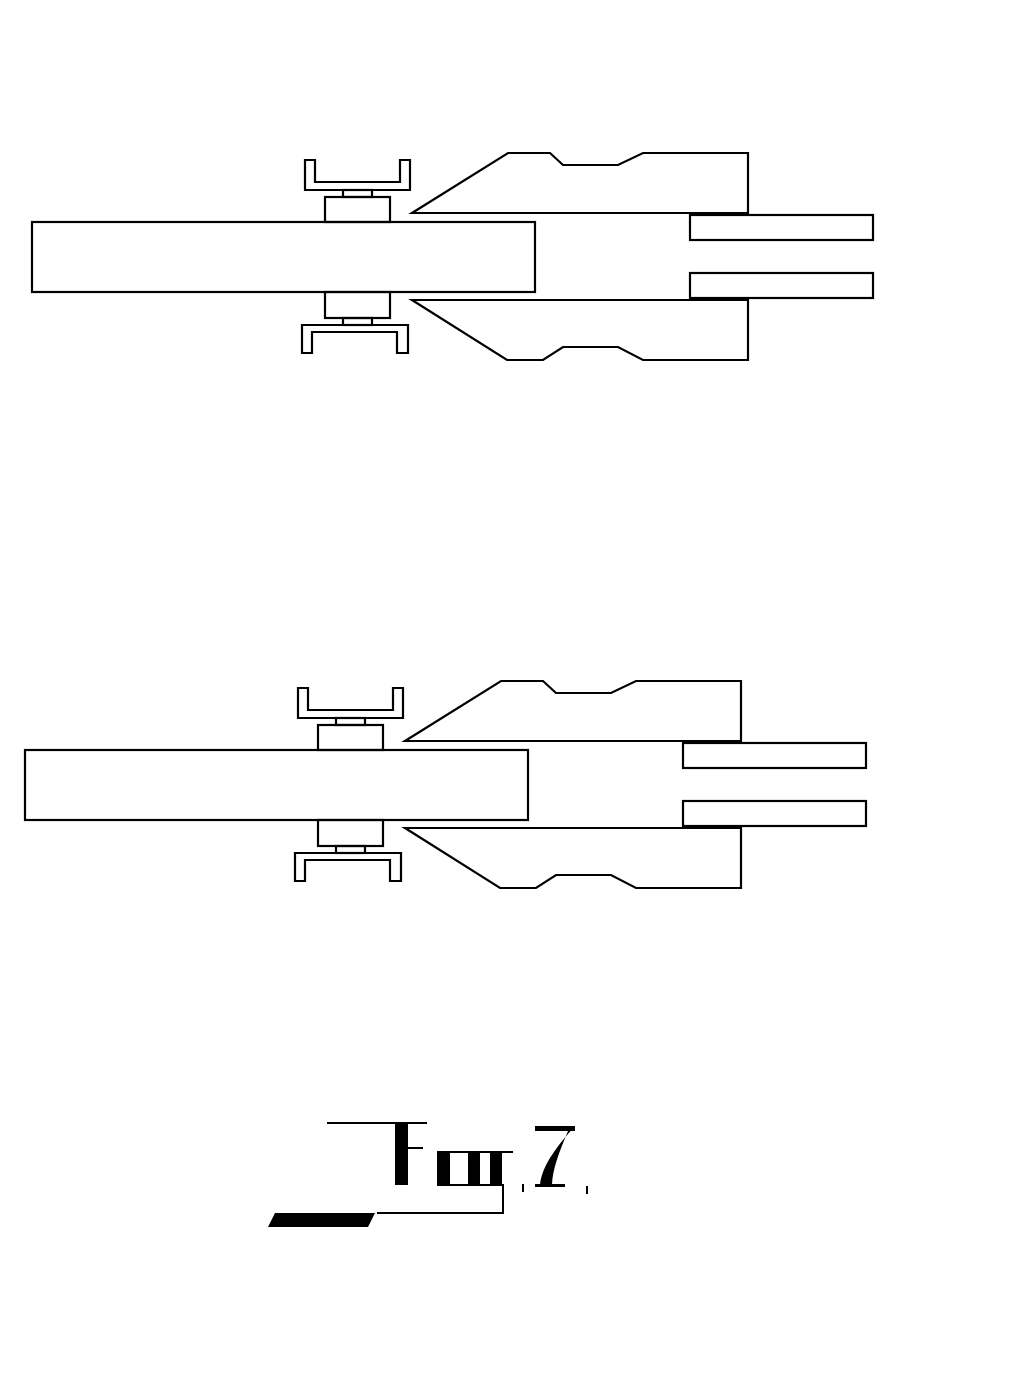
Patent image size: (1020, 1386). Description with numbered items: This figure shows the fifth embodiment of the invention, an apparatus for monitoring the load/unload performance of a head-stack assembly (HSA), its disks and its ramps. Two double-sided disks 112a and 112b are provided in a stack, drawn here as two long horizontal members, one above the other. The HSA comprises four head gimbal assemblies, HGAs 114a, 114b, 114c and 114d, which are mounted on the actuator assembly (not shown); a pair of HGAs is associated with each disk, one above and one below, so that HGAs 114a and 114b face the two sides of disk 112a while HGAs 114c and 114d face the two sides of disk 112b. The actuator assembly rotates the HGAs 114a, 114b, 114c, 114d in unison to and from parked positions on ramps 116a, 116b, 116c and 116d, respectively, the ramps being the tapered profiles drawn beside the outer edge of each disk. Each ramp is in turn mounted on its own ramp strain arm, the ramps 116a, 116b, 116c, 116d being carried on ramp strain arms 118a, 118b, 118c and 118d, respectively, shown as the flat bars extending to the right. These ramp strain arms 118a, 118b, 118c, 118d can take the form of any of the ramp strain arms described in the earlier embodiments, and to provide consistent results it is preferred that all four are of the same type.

The double-sided disk 112a is at (122, 247).
The double-sided disk 112b is at (276, 736).
The head gimbal assembly (HGA) 114a is at (305, 182).
The head gimbal assembly (HGA) 114b is at (302, 332).
The head gimbal assembly (HGA) 114c is at (280, 682).
The head gimbal assembly (HGA) 114d is at (264, 888).
The ramp 116a is at (525, 153).
The ramp 116b is at (533, 360).
The ramp 116c is at (573, 664).
The ramp 116d is at (573, 903).
The ramp strain arm 118a is at (830, 222).
The ramp strain arm 118b is at (850, 289).
The ramp strain arm 118c is at (777, 712).
The ramp strain arm 118d is at (774, 862).